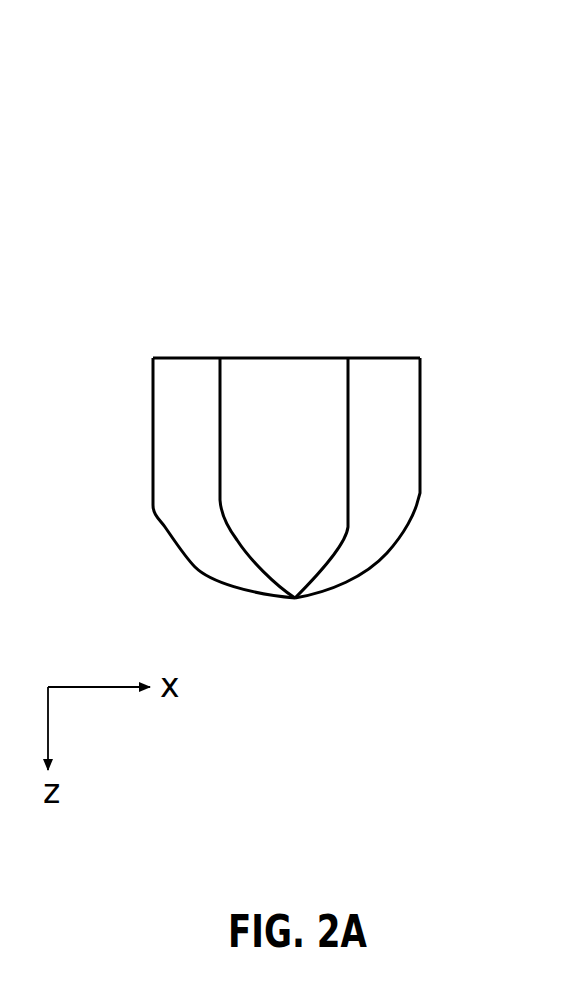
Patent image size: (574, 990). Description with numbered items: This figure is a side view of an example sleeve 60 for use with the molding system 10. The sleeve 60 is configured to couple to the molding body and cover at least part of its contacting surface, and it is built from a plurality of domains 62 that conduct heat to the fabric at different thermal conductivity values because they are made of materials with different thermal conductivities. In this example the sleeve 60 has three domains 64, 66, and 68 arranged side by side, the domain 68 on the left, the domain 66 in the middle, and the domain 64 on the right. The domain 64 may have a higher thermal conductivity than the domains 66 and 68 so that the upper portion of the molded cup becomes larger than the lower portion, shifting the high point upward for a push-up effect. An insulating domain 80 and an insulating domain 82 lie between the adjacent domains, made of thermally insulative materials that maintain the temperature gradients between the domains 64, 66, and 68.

The molding system 10 is at (232, 117).
The sleeve 60 is at (192, 210).
The plurality of domains 62 is at (167, 318).
The domain 64 is at (407, 456).
The domain 66 is at (307, 456).
The domain 68 is at (207, 456).
The insulating domain 80 is at (348, 358).
The insulating domain 82 is at (220, 358).